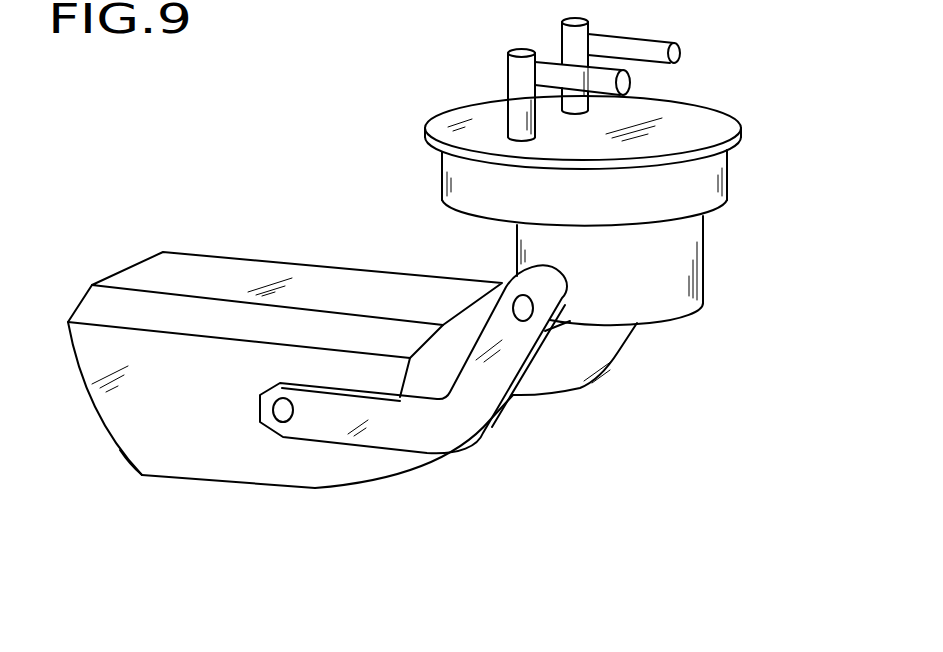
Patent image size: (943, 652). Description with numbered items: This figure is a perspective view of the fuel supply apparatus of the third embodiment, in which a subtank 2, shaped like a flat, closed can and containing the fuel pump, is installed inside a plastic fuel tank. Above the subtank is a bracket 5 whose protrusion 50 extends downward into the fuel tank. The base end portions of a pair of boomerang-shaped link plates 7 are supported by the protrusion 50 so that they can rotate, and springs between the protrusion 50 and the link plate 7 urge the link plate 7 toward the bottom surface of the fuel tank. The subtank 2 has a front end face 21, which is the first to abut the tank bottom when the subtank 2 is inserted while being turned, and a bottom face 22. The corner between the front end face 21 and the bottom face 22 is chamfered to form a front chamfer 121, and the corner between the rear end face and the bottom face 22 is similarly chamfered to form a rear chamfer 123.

The subtank 2 is at (258, 347).
The front end face 21 is at (83, 385).
The bottom face 22 is at (245, 482).
The front chamfer 121 is at (128, 458).
The rear chamfer 123 is at (415, 467).
The bracket 5 is at (614, 171).
The protrusion 50 is at (672, 242).
The link plate 7 is at (478, 412).